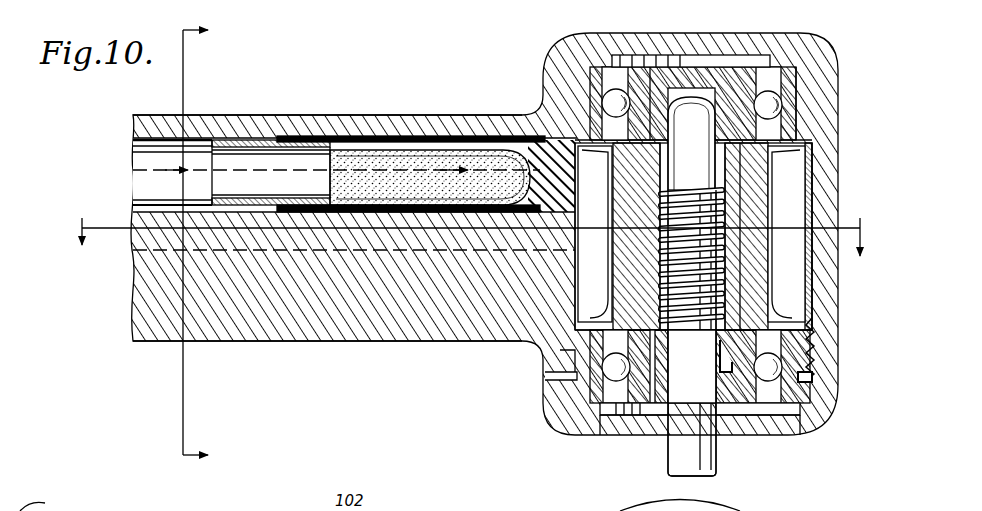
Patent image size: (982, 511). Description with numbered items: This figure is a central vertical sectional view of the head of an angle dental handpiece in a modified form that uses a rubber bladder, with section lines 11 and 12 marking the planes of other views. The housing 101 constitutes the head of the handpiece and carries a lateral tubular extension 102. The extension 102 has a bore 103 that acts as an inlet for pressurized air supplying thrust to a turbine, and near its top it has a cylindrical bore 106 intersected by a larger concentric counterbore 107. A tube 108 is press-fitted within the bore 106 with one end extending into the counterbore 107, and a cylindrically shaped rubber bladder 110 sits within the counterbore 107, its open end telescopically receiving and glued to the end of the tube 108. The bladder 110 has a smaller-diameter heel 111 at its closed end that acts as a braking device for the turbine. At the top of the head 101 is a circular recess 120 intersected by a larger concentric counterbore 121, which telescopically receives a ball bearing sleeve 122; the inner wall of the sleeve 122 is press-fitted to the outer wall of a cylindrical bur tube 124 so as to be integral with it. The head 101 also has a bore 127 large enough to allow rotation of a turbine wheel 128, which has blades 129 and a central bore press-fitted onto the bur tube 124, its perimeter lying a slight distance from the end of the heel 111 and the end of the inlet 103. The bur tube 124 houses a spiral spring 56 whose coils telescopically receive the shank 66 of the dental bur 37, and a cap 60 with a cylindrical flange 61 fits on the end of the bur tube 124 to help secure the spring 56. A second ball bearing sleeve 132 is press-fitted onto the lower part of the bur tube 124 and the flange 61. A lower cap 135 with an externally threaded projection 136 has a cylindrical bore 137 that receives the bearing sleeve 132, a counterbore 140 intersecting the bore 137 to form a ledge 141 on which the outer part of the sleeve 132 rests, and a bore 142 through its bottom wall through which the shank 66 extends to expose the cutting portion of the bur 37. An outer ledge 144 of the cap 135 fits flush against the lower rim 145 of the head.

The section line 11- 11 is at (470, 225).
The section line 12- 12 is at (179, 243).
The dental bur 37 is at (720, 470).
The spiral spring 56 is at (712, 160).
The cap 60 is at (664, 408).
The cylindrical flange 61 is at (722, 408).
The shank 66 is at (752, 172).
The housing 101 is at (570, 48).
The lateral tubular extension 102 is at (225, 113).
The bore 103 is at (160, 250).
The cylindrical bore 106 is at (150, 150).
The counterbore 107 is at (545, 116).
The tube 108 is at (300, 152).
The rubber bladder 110 is at (422, 135).
The heel 111 is at (594, 262).
The circular recess 120 is at (762, 62).
The counterbore 121 is at (800, 88).
The ball bearing sleeve 122 is at (772, 118).
The bur tube 124 is at (612, 80).
The bore 127 is at (800, 140).
The turbine wheel 128 is at (812, 168).
The blades 129 is at (790, 190).
The second ball bearing sleeve 132 is at (772, 345).
The cap 135 is at (800, 432).
The externally threaded projection 136 is at (810, 344).
The cylindrical bore 137 is at (800, 395).
The counterbore 140 is at (738, 418).
The ledge 141 is at (622, 412).
The bore 142 is at (716, 428).
The outer ledge 144 is at (792, 380).
The lower rim 145 is at (566, 378).